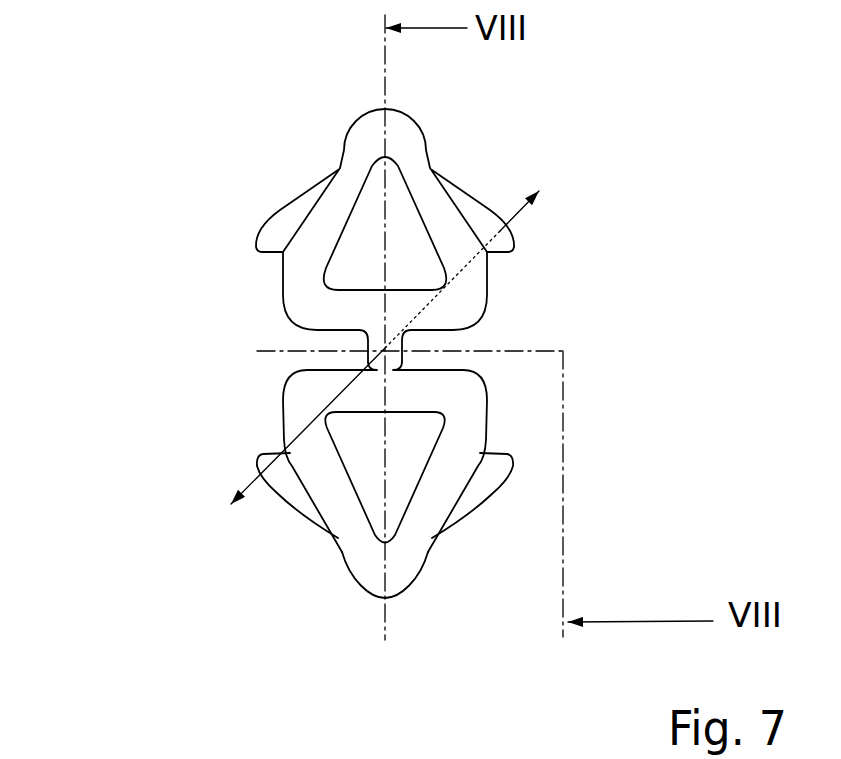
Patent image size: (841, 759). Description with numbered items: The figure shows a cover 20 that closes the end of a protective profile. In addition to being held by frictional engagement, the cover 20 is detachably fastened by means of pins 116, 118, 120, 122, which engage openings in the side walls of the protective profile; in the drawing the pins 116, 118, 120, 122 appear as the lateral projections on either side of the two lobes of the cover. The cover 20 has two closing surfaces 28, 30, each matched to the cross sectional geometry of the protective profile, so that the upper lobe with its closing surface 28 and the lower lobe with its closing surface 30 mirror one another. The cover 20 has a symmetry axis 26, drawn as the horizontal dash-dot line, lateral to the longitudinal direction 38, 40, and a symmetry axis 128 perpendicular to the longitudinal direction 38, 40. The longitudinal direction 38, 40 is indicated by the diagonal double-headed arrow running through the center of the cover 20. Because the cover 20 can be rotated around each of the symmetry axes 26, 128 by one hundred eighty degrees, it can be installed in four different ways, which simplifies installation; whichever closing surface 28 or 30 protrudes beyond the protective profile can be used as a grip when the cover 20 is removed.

The cover 20 is at (417, 350).
The symmetry axis 26 is at (502, 350).
The closing surface 28 is at (348, 167).
The closing surface 30 is at (300, 402).
The longitudinal direction 38 is at (517, 217).
The longitudinal direction 40 is at (304, 427).
The pin 116 is at (308, 498).
The pin 118 is at (488, 482).
The pin 120 is at (272, 231).
The pin 122 is at (505, 240).
The symmetry axis 128 is at (387, 577).